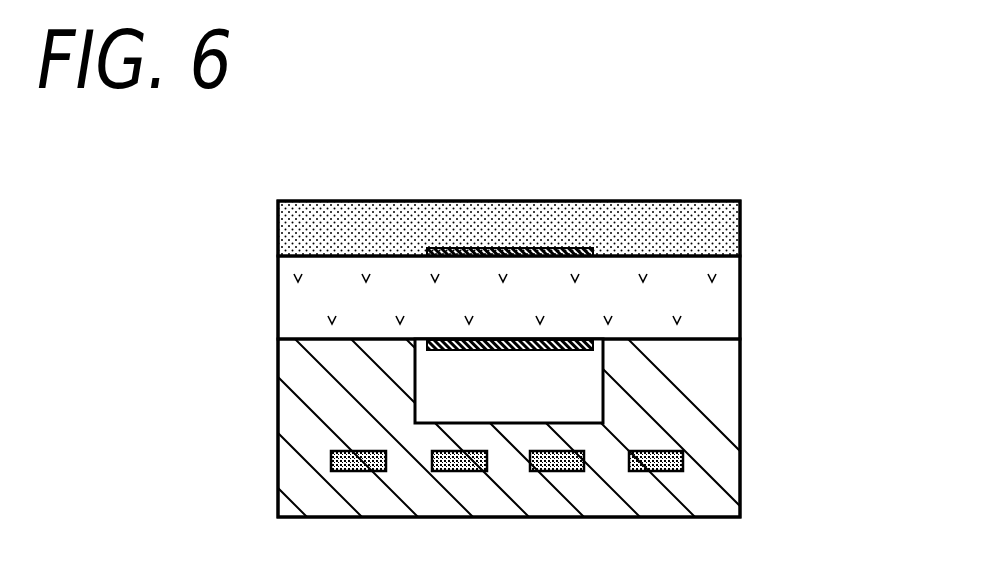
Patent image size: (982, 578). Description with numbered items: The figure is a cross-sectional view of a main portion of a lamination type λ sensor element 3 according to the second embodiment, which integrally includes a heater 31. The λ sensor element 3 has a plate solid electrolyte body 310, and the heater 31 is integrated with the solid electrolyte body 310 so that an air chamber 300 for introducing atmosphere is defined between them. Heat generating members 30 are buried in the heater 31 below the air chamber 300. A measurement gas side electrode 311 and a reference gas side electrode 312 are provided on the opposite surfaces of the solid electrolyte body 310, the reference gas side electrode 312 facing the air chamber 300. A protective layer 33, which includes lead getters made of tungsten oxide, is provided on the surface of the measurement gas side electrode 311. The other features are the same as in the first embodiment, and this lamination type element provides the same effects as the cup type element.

The λ sensor element 3 is at (407, 193).
The heat generating members 30 is at (350, 457).
The heater 31 is at (741, 476).
The protective layer 33 is at (695, 228).
The air chamber 300 is at (568, 400).
The solid electrolyte body 310 is at (718, 313).
The measurement gas side electrode 311 is at (513, 247).
The reference gas side electrode 312 is at (465, 352).